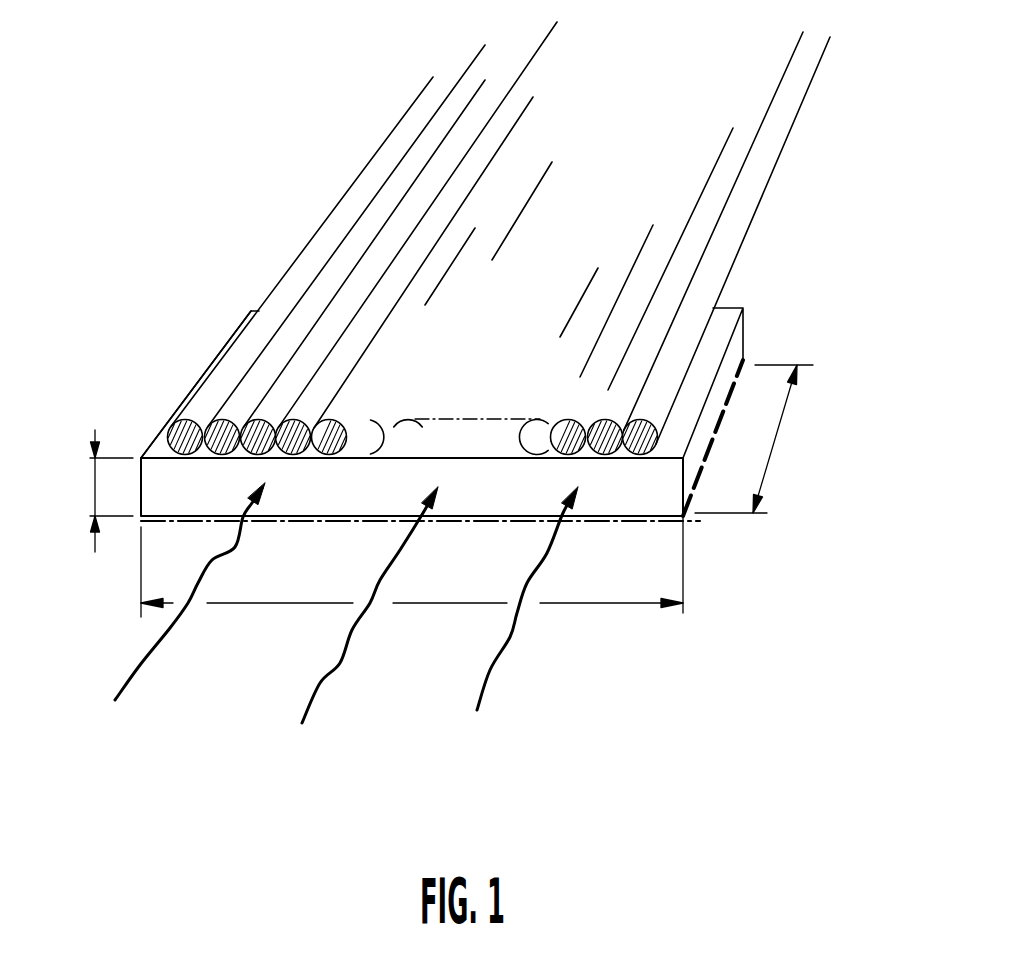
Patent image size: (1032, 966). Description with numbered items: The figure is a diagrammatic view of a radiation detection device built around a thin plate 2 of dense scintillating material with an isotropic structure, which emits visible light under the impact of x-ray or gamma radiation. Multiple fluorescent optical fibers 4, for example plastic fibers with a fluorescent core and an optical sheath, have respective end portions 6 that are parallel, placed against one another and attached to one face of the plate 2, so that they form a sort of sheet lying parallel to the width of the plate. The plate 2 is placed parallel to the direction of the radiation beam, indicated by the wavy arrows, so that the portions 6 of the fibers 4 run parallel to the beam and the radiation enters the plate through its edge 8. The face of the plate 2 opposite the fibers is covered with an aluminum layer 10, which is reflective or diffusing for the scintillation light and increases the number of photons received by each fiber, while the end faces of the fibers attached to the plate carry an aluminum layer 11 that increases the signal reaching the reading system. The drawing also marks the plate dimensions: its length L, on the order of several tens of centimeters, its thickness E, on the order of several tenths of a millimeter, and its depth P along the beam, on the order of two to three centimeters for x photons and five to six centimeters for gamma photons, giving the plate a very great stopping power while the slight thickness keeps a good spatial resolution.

The thin plate 2 is at (200, 360).
The fluorescent optical fibers 4 is at (401, 120).
The portions of the fibers 6 is at (348, 287).
The edge of the plate 8 is at (158, 480).
The aluminum layer 10 is at (638, 522).
The aluminum layer 11 is at (586, 434).
The thickness of the plate E is at (99, 491).
The length of the plate L is at (412, 566).
The depth of the plate P is at (754, 439).